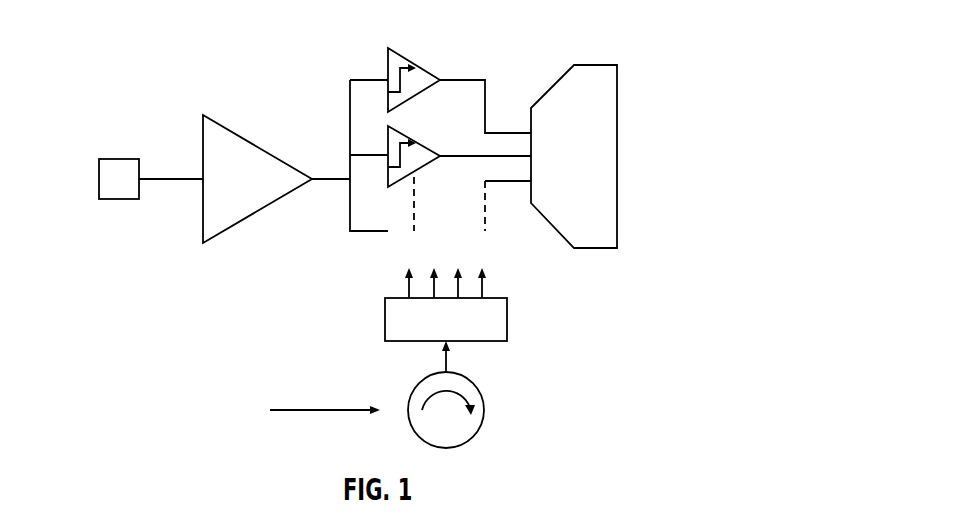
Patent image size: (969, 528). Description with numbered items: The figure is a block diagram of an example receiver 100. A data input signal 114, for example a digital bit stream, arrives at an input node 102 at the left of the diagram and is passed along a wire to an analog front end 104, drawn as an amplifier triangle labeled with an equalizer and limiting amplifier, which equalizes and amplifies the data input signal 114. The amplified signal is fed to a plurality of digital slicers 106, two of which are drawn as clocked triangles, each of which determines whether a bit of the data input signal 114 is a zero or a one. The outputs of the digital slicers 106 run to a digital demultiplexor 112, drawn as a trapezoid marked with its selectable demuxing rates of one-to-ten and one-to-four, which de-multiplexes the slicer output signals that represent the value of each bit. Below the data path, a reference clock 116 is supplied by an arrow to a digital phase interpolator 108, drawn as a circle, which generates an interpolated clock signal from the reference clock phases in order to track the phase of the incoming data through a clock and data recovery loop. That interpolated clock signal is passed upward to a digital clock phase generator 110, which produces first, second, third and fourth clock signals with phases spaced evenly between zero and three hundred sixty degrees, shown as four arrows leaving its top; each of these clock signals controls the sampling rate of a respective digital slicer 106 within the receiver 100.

The receiver 100 is at (707, 45).
The input node 102 is at (109, 158).
The analog front end 104 is at (260, 146).
The digital slicers 106 is at (387, 143).
The digital phase interpolator 108 is at (426, 380).
The digital clock phase generator 110 is at (394, 298).
The digital demultiplexor 112 is at (595, 65).
The data input signal 114 is at (186, 177).
The reference clock 116 is at (105, 393).